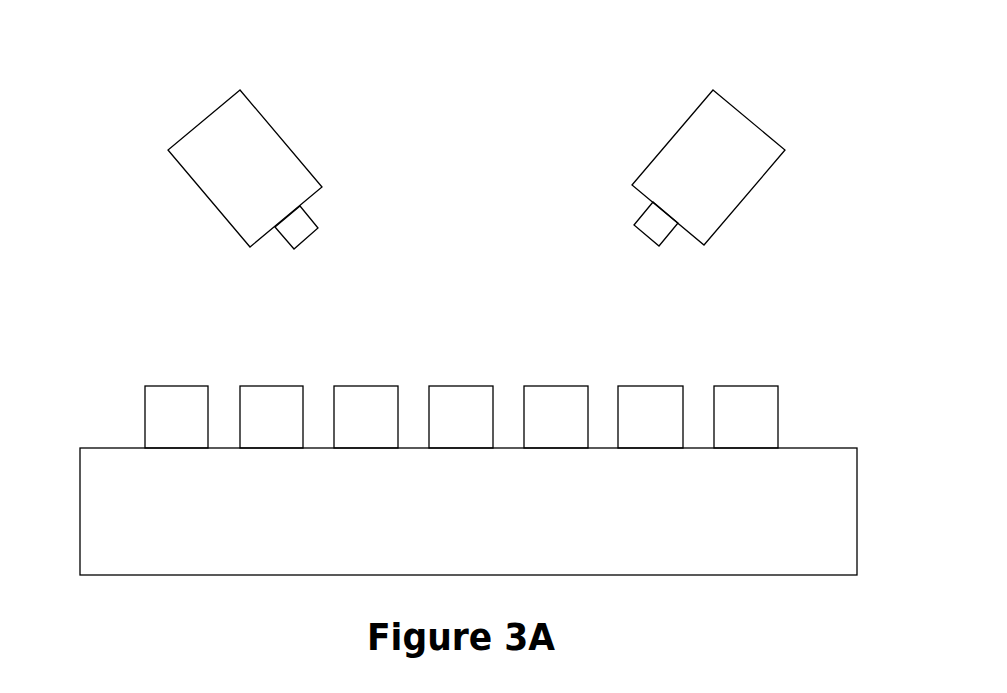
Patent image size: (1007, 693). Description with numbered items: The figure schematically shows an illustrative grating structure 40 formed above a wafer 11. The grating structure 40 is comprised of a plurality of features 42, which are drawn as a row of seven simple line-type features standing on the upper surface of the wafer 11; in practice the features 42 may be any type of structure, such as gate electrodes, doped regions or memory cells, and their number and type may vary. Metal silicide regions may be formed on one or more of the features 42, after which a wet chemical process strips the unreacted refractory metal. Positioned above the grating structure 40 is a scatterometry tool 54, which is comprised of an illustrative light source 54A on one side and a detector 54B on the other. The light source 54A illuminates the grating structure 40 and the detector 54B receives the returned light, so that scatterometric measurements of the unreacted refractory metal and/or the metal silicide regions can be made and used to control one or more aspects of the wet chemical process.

The wafer 11 is at (762, 550).
The grating structure 40 is at (465, 366).
The feature 42 is at (747, 417).
The scatterometry tool 54 is at (722, 152).
The light source 54A is at (217, 180).
The detector 54B is at (727, 173).